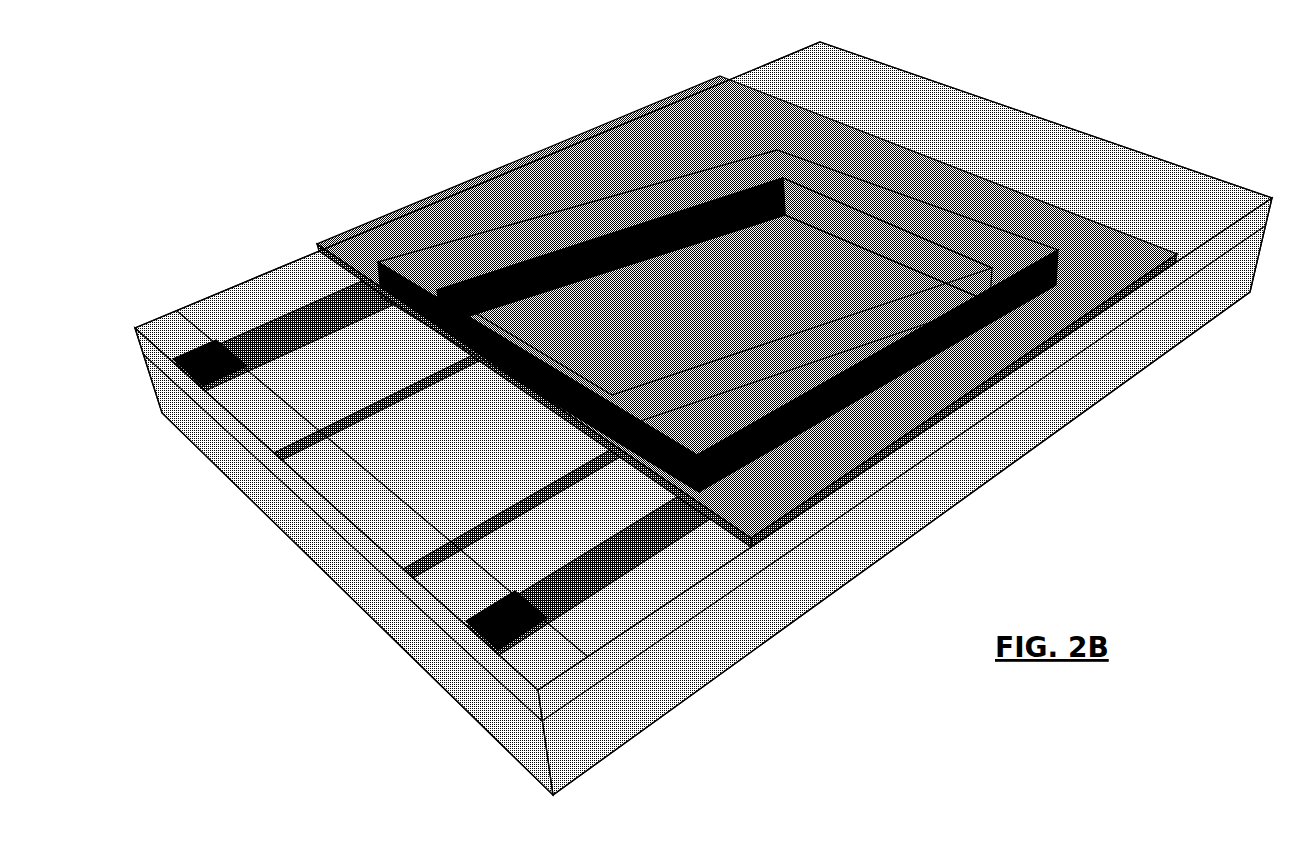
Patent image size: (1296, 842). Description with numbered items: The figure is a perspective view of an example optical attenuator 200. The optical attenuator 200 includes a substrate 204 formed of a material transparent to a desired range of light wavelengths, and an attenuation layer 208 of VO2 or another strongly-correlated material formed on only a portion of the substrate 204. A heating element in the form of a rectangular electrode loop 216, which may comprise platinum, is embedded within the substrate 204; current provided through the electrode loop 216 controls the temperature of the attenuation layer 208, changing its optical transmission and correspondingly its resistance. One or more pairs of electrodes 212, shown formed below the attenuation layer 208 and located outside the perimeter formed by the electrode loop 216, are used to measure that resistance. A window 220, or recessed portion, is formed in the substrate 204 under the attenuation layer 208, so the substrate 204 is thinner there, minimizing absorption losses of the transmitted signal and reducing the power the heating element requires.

The optical attenuator 200 is at (262, 148).
The substrate 204 is at (392, 632).
The attenuation layer 208 is at (485, 190).
The electrodes 212 is at (175, 385).
The electrode loop 216 is at (268, 462).
The window 220 is at (600, 468).